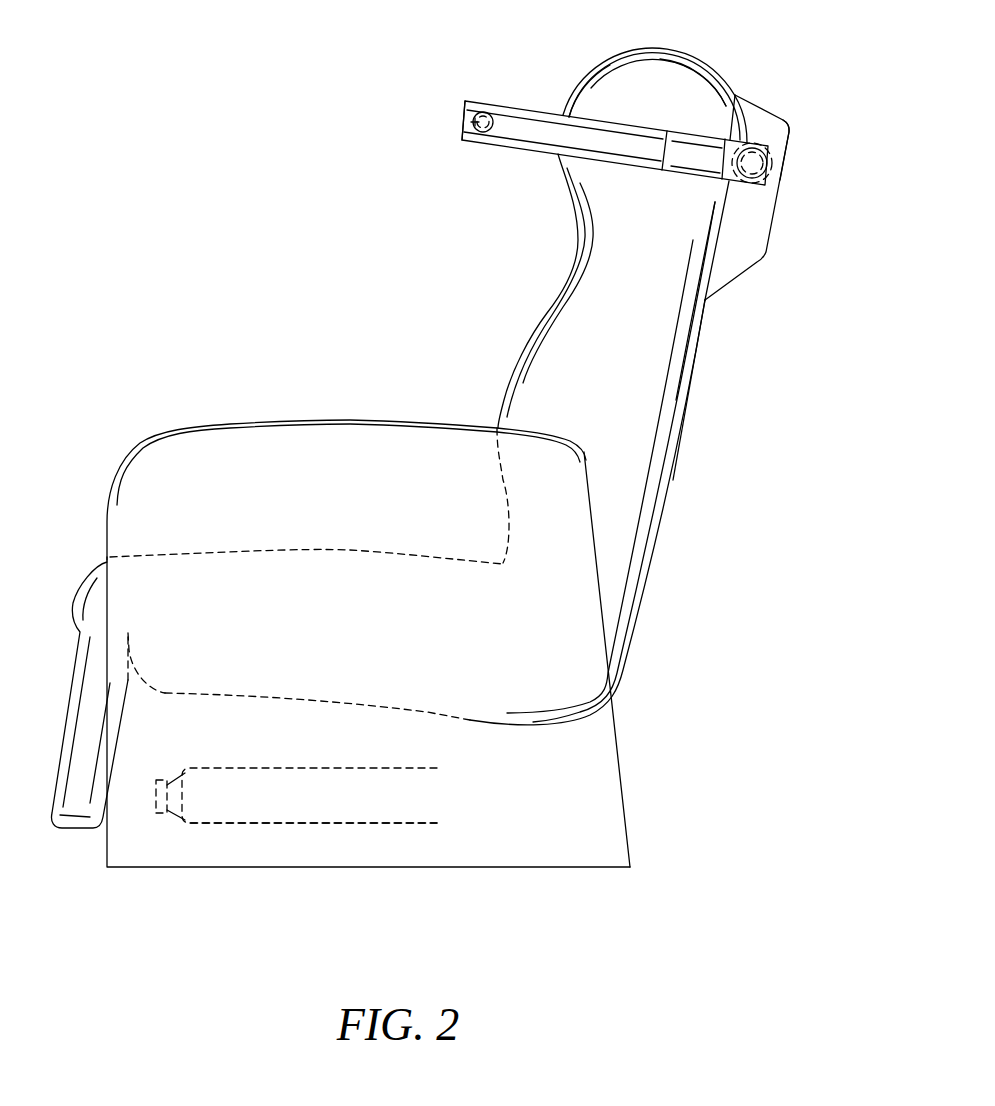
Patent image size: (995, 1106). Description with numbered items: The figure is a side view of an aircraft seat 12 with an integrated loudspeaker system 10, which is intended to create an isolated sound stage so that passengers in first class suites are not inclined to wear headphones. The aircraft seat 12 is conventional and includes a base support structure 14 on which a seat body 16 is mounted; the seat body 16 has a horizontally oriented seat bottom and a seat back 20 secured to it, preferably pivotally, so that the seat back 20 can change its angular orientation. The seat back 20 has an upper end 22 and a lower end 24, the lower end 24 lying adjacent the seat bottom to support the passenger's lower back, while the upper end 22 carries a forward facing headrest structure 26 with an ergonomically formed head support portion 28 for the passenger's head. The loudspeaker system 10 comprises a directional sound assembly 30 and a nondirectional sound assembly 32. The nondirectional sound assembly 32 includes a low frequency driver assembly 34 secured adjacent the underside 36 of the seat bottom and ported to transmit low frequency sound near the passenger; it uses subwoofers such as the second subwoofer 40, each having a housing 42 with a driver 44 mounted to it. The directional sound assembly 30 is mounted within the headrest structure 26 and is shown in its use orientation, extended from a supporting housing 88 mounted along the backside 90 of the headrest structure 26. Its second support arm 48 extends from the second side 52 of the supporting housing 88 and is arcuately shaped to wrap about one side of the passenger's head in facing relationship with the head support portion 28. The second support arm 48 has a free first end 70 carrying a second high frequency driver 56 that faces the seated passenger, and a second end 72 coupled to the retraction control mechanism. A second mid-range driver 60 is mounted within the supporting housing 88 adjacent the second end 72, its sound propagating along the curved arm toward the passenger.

The loudspeaker system 10 is at (373, 278).
The aircraft seat 12 is at (608, 610).
The base support structure 14 is at (610, 865).
The seat body 16 is at (652, 445).
The seat back 20 is at (652, 280).
The upper end 22 is at (613, 85).
The lower end 24 is at (563, 663).
The headrest structure 26 is at (738, 75).
The head support portion 28 is at (563, 98).
The directional sound assembly 30 is at (777, 100).
The nondirectional sound assembly 32 is at (227, 832).
The low frequency driver assembly 34 is at (252, 757).
The underside 36 is at (427, 712).
The second subwoofer 40 is at (313, 768).
The housing 42 is at (323, 825).
The driver 44 is at (178, 790).
The second support arm 48 is at (700, 135).
The second side 52 is at (653, 54).
The second high frequency driver 56 is at (462, 122).
The second mid-range driver 60 is at (637, 180).
The first end 70 is at (464, 103).
The second end 72 is at (766, 164).
The supporting housing 88 is at (793, 143).
The backside 90 is at (690, 380).